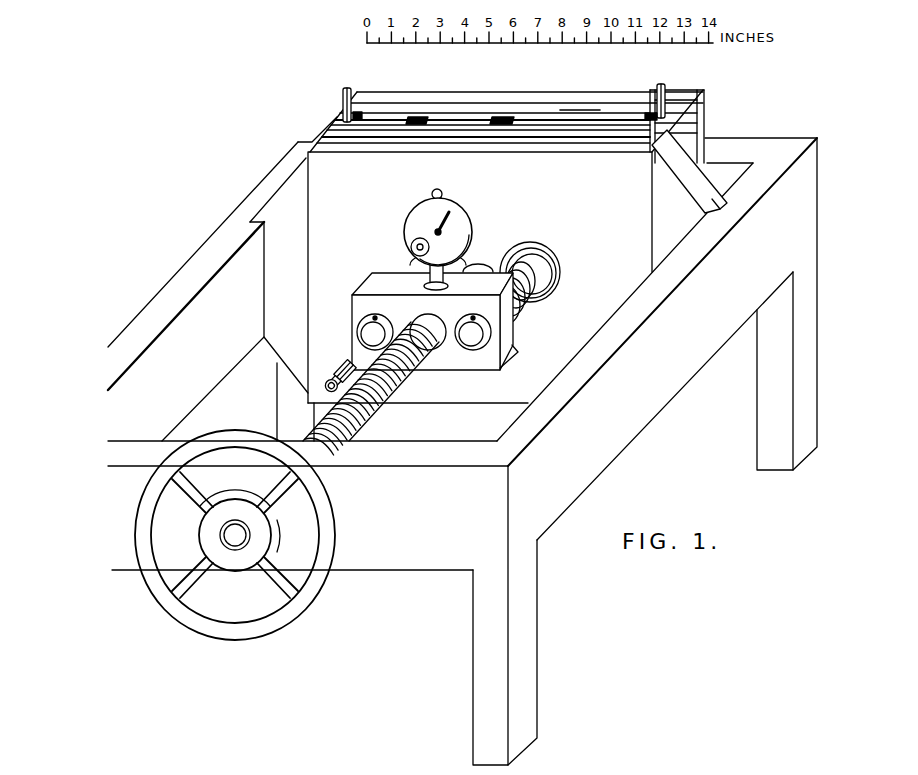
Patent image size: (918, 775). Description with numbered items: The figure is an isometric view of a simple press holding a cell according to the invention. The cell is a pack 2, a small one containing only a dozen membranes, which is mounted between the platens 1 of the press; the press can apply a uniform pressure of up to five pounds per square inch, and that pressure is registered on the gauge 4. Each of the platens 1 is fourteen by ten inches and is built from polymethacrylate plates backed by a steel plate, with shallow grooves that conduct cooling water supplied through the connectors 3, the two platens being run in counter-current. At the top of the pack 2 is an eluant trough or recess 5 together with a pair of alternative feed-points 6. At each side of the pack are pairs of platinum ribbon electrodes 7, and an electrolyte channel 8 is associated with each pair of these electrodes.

The platens 1 is at (326, 113).
The pack 2 is at (682, 125).
The connectors 3 is at (328, 371).
The gauge 4 is at (412, 230).
The eluant trough 5 is at (395, 120).
The feed-points 6 is at (420, 116).
The platinum ribbon electrodes 7 is at (348, 88).
The electrolyte channel 8 is at (365, 110).